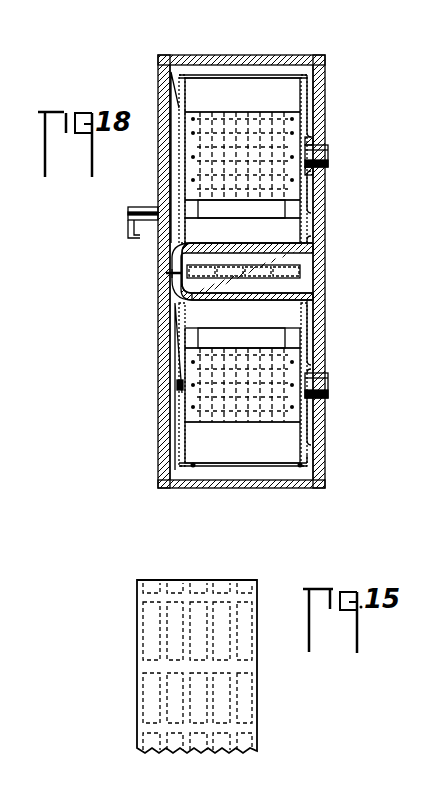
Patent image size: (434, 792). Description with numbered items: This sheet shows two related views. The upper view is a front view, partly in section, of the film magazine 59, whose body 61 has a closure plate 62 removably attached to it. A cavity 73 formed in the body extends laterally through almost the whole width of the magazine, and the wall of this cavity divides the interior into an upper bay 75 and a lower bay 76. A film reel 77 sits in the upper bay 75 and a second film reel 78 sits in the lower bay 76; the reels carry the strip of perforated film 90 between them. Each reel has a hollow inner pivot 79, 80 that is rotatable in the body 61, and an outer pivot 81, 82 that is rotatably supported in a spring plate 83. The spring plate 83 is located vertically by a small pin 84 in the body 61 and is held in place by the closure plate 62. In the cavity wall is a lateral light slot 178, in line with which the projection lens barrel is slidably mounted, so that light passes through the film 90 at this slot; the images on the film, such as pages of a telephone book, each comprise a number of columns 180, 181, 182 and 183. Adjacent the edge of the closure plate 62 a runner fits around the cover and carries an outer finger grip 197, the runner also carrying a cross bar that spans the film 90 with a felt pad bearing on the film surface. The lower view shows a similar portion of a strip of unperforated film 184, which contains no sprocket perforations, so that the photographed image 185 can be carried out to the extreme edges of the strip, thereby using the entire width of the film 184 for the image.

In FIG. 18, the film magazine 59 is at (190, 488).
In FIG. 18, the body 61 is at (250, 58).
In FIG. 18, the closure plate 62 is at (158, 120).
In FIG. 18, the cavity 73 is at (297, 253).
In FIG. 18, the upper bay 75 is at (283, 80).
In FIG. 18, the lower bay 76 is at (287, 460).
In FIG. 18, the film reel 77 is at (307, 97).
In FIG. 18, the film reel 78 is at (305, 442).
In FIG. 18, the hollow inner pivot 79 is at (326, 149).
In FIG. 18, the hollow inner pivot 80 is at (328, 377).
In FIG. 18, the outer pivot 81 is at (167, 158).
In FIG. 18, the outer pivot 82 is at (177, 385).
In FIG. 18, the spring plate 83 is at (173, 322).
In FIG. 18, the small pin 84 is at (165, 275).
In FIG. 18, the perforated film 90 is at (242, 266).
In FIG. 18, the lateral light slot 178 is at (300, 272).
In FIG. 18, the column 180 is at (200, 280).
In FIG. 18, the column 181 is at (228, 280).
In FIG. 18, the column 182 is at (253, 280).
In FIG. 18, the column 183 is at (278, 280).
In FIG. 15, the unperforated film 184 is at (258, 667).
In FIG. 15, the photographed image 185 is at (203, 607).
In FIG. 18, the outer finger grip 197 is at (137, 206).